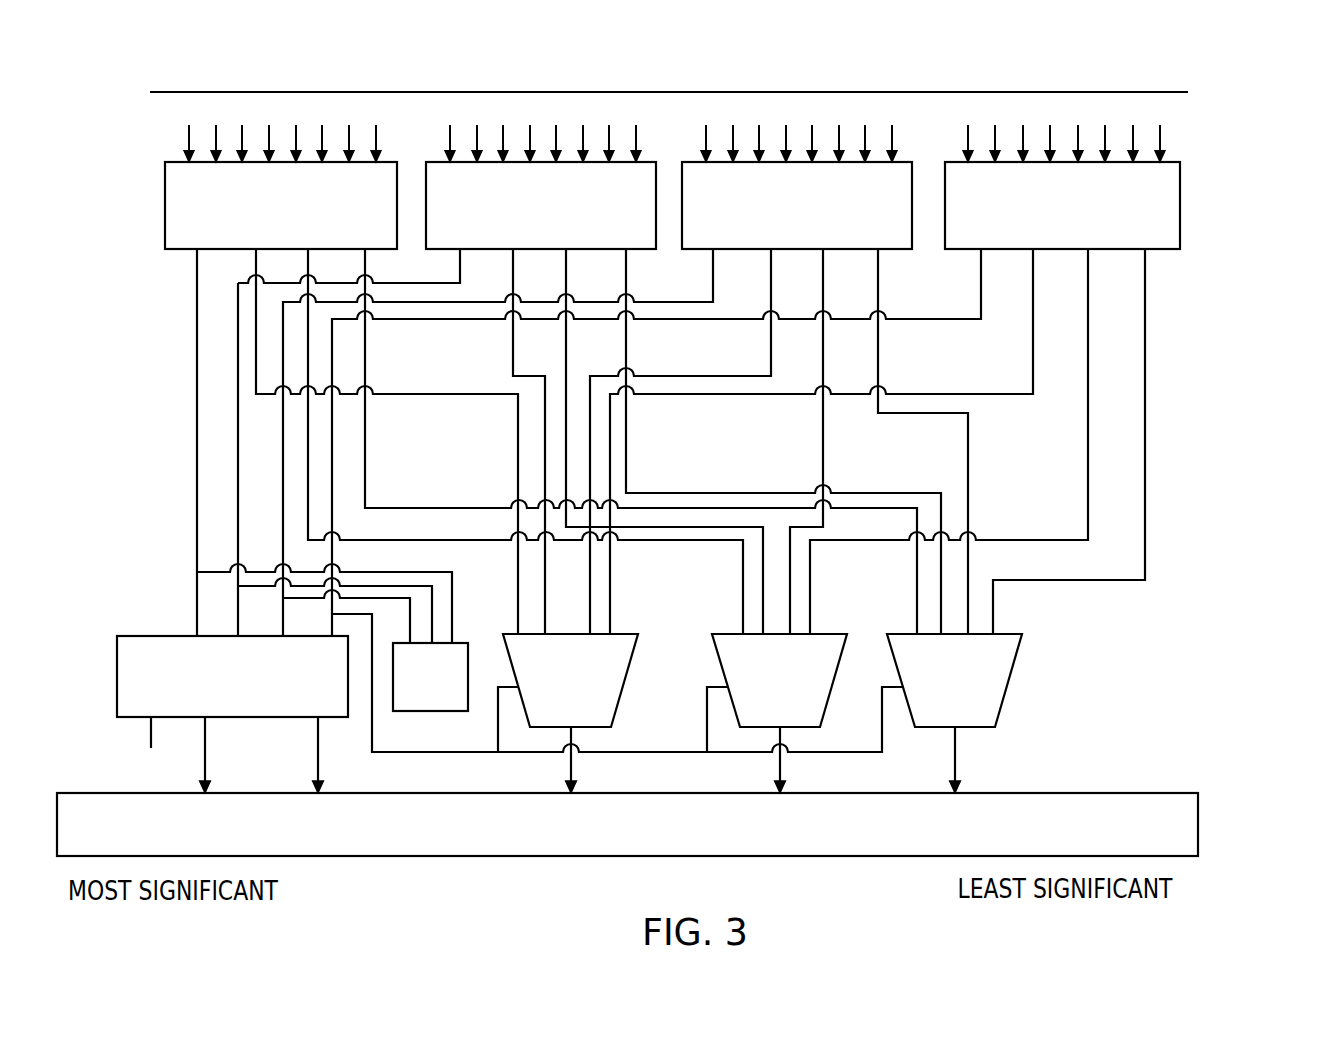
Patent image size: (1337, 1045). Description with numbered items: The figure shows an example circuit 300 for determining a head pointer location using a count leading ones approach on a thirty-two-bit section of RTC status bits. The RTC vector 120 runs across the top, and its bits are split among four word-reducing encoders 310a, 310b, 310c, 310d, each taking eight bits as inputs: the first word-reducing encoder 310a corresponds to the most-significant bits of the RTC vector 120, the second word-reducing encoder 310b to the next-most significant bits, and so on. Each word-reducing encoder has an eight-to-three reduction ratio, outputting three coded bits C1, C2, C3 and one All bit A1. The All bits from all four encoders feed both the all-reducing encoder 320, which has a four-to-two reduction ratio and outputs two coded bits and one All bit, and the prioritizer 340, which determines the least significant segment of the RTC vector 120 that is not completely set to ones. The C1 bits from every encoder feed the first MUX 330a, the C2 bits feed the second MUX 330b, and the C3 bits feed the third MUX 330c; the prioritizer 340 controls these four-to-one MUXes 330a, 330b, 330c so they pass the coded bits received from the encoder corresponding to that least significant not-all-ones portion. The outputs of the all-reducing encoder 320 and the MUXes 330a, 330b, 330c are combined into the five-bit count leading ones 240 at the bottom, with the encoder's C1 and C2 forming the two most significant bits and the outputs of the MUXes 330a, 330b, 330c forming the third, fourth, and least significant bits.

The RTC vector 120 is at (253, 92).
The first word-reducing encoder 310a is at (253, 203).
The second word-reducing encoder 310b is at (513, 203).
The third word-reducing encoder 310c is at (769, 203).
The fourth word-reducing encoder 310d is at (1034, 203).
The circuit 300 is at (1216, 325).
The all-reducing encoder 320 is at (217, 675).
The prioritizer 340 is at (410, 683).
The first MUX 330a is at (547, 684).
The second MUX 330b is at (757, 684).
The third MUX 330c is at (932, 684).
The count leading ones 240 is at (1103, 793).